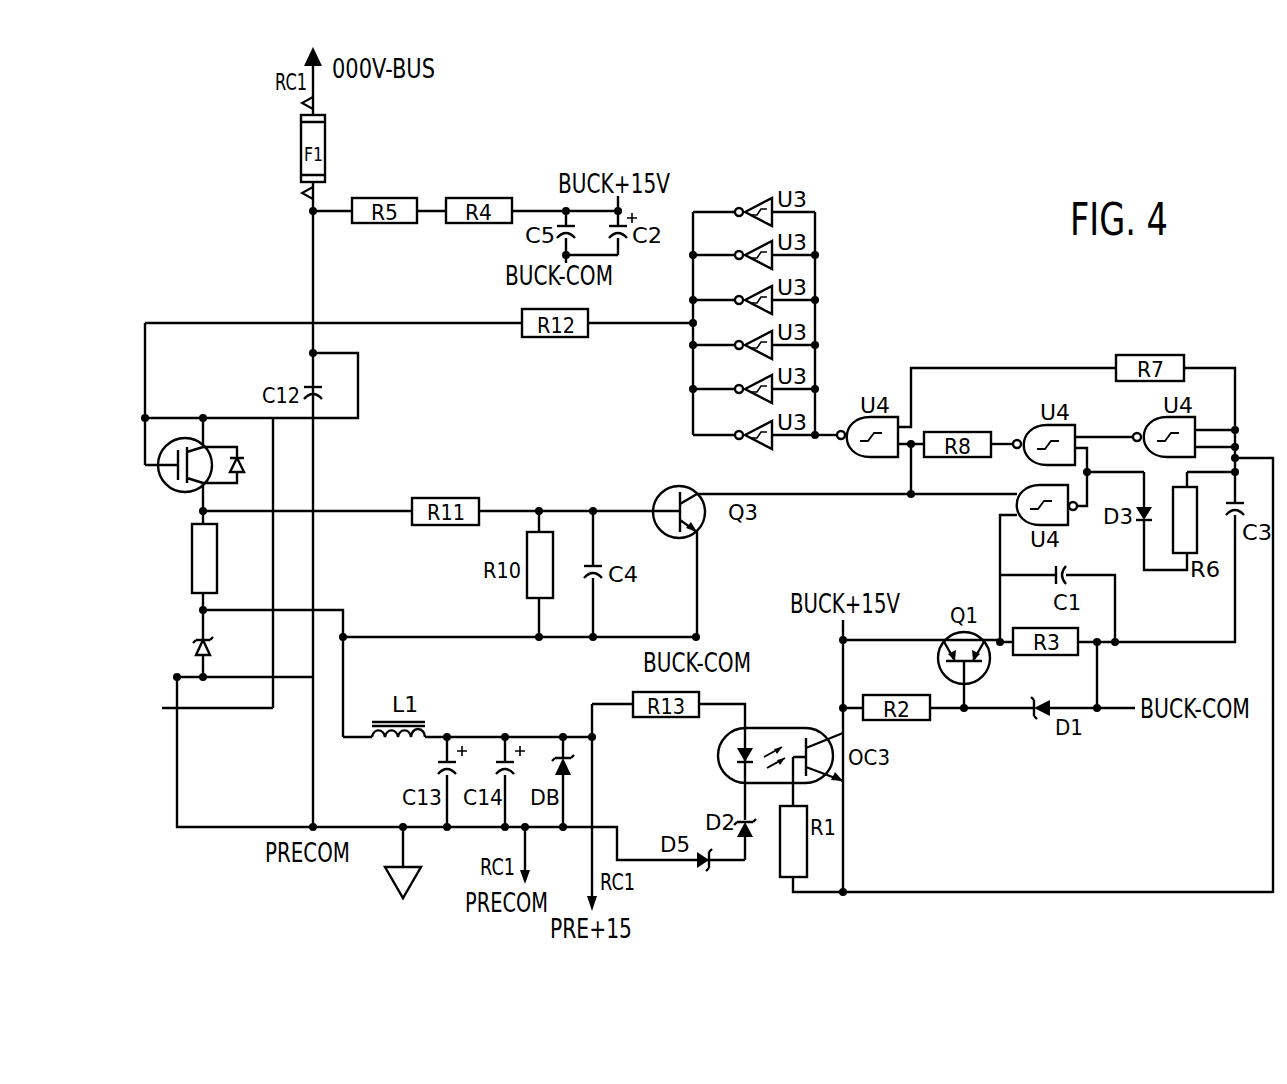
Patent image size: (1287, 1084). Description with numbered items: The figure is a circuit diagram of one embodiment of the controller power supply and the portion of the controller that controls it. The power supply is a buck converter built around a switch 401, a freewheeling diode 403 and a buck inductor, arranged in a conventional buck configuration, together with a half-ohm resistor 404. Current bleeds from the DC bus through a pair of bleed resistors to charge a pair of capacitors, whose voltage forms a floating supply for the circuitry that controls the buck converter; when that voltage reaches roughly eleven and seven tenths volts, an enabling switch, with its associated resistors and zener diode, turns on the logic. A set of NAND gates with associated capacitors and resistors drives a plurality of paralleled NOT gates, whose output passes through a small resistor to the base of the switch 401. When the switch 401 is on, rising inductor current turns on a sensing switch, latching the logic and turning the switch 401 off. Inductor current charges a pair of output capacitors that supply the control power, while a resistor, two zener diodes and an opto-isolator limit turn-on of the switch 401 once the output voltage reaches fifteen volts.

The switch 401 is at (163, 482).
The freewheeling diode 403 is at (197, 650).
The resistor 404 is at (192, 556).